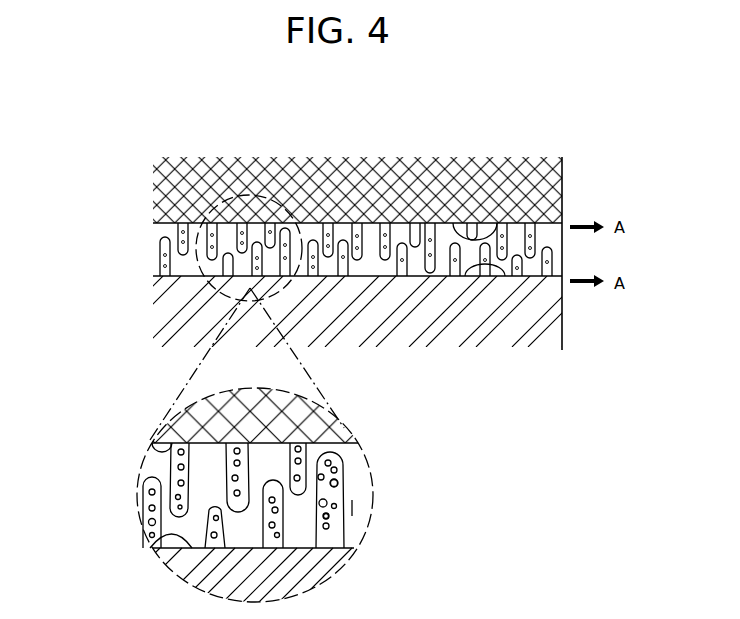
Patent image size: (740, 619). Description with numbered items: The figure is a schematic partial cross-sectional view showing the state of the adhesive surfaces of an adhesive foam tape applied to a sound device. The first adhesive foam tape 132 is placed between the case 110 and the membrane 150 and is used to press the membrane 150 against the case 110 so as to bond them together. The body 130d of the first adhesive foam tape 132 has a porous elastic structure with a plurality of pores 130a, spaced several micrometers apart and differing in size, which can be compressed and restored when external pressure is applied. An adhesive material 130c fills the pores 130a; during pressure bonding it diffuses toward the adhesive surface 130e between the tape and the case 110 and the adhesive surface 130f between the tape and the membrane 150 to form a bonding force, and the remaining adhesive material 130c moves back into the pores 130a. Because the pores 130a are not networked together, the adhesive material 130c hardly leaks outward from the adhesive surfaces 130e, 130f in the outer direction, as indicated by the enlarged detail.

The case 110 is at (545, 186).
The membrane 150 is at (538, 312).
The first adhesive foam tape 132 is at (376, 248).
The adhesive surface 130e is at (485, 225).
The adhesive surface 130f is at (473, 273).
The pores 130a is at (345, 482).
The body 130d is at (355, 508).
The adhesive material 130c is at (326, 517).